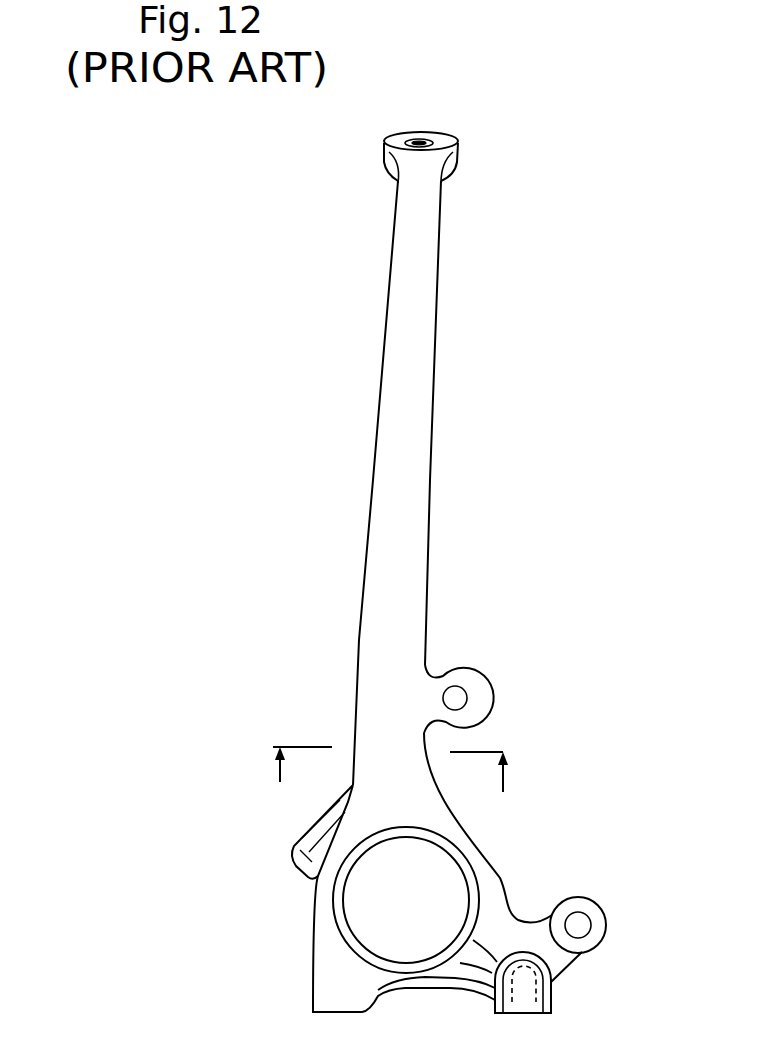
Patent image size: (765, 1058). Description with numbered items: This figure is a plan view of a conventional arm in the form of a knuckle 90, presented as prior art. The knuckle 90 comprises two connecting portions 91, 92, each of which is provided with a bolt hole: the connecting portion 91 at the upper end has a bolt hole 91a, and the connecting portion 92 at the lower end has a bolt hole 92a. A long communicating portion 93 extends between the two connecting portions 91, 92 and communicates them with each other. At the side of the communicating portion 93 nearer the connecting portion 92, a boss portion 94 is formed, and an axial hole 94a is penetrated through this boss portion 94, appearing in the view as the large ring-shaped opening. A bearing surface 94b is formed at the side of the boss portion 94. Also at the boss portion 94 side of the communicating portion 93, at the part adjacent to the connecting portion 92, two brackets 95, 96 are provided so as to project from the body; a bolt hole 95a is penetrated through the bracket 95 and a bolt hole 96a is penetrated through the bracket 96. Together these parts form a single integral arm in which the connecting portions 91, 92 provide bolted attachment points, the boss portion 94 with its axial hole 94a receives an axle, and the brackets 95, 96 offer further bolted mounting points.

The knuckle 90 is at (329, 395).
The connecting portion 91 is at (450, 166).
The bolt hole 91a is at (419, 142).
The connecting portion 92 is at (530, 1000).
The bolt hole 92a is at (512, 1018).
The communicating portion 93 is at (417, 447).
The boss portion 94 is at (485, 866).
The axial hole 94a is at (345, 922).
The bearing surface 94b is at (302, 828).
The bracket 95 is at (448, 681).
The bolt hole 95a is at (460, 698).
The bracket 96 is at (597, 940).
The bolt hole 96a is at (587, 922).